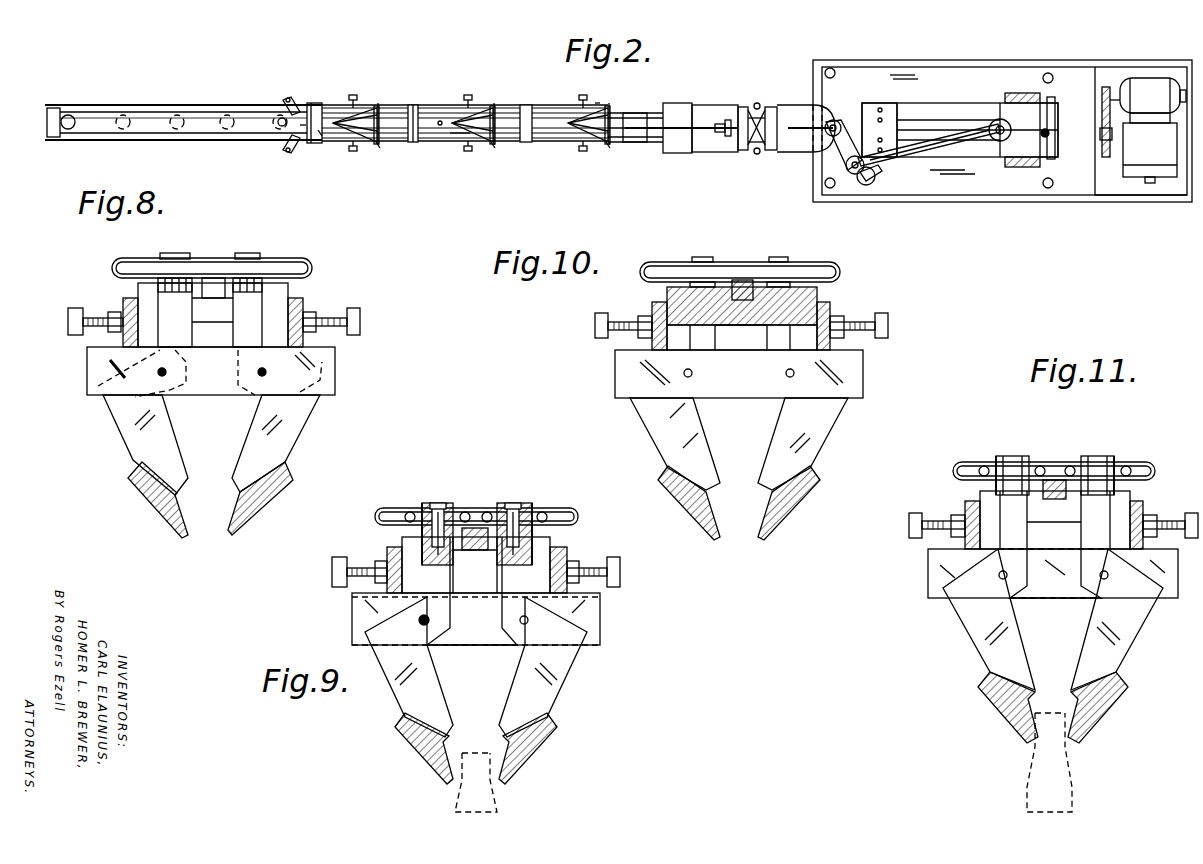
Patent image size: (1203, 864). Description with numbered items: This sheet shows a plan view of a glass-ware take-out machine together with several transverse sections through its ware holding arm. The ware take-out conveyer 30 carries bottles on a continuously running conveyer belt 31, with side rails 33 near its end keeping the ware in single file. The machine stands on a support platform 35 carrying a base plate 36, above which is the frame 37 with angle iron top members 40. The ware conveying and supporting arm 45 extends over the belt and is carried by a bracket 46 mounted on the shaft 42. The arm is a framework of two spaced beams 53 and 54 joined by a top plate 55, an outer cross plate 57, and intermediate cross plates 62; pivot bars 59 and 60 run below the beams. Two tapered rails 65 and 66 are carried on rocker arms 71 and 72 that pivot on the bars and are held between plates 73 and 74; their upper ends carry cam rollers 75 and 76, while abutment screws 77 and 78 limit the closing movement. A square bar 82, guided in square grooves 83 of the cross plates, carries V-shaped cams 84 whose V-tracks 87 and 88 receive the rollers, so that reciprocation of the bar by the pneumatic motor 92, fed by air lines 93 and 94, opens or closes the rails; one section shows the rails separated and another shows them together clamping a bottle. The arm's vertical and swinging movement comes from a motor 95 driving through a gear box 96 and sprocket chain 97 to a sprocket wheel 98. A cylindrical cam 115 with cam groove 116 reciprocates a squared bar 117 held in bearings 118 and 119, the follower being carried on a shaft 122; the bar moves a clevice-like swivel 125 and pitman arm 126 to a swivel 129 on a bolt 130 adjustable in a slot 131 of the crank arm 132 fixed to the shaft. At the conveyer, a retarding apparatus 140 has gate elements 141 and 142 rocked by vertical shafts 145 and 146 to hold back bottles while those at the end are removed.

In FIG. 2, the ware take-out conveyer 30 is at (114, 98).
In FIG. 2, the conveyer belt 31 is at (158, 118).
In FIG. 2, the side rails 33 is at (196, 120).
In FIG. 2, the support platform 35 is at (1113, 205).
In FIG. 2, the base plate 36 is at (992, 188).
In FIG. 2, the support or frame 37 is at (1072, 95).
In FIG. 2, the angle iron top members 40 is at (938, 103).
In FIG. 2, the shaft 42 is at (840, 119).
In FIG. 2, the ware conveying and supporting arm 45 is at (445, 150).
In FIG. 8, the ware conveying and supporting arm 45 is at (122, 458).
In FIG. 9, the ware conveying and supporting arm 45 is at (320, 602).
In FIG. 10, the ware conveying and supporting arm 45 is at (870, 302).
In FIG. 11, the ware conveying and supporting arm 45 is at (940, 628).
In FIG. 2, the bracket 46 is at (790, 110).
In FIG. 2, the beam 53 is at (635, 110).
In FIG. 8, the beam 53 is at (127, 298).
In FIG. 9, the beam 53 is at (388, 547).
In FIG. 10, the beam 53 is at (832, 302).
In FIG. 11, the beam 53 is at (970, 550).
In FIG. 2, the beam 54 is at (625, 145).
In FIG. 8, the beam 54 is at (300, 303).
In FIG. 9, the beam 54 is at (566, 547).
In FIG. 10, the beam 54 is at (655, 302).
In FIG. 11, the beam 54 is at (1144, 507).
In FIG. 2, the top plate 55 is at (675, 112).
In FIG. 2, the cross plate 57 is at (314, 104).
In FIG. 2, the pivot bar 59 is at (441, 118).
In FIG. 8, the pivot bar 59 is at (158, 378).
In FIG. 9, the pivot bar 59 is at (420, 620).
In FIG. 10, the pivot bar 59 is at (788, 377).
In FIG. 11, the pivot bar 59 is at (1000, 580).
In FIG. 2, the pivot bar 60 is at (545, 140).
In FIG. 8, the pivot bar 60 is at (268, 373).
In FIG. 9, the pivot bar 60 is at (530, 620).
In FIG. 10, the pivot bar 60 is at (692, 377).
In FIG. 11, the pivot bar 60 is at (1102, 580).
In FIG. 2, the cross plates 62 is at (415, 104).
In FIG. 8, the cross plates 62 is at (275, 295).
In FIG. 9, the cross plates 62 is at (402, 537).
In FIG. 10, the cross plates 62 is at (745, 322).
In FIG. 11, the cross plates 62 is at (1130, 492).
In FIG. 8, the rail 65 is at (160, 505).
In FIG. 9, the rail 65 is at (430, 770).
In FIG. 10, the rail 65 is at (788, 530).
In FIG. 11, the rail 65 is at (1005, 712).
In FIG. 8, the rail 66 is at (255, 505).
In FIG. 9, the rail 66 is at (520, 758).
In FIG. 10, the rail 66 is at (700, 530).
In FIG. 11, the rail 66 is at (1097, 710).
In FIG. 8, the rocker arm 71 is at (147, 437).
In FIG. 9, the rocker arm 71 is at (415, 696).
In FIG. 10, the rocker arm 71 is at (808, 435).
In FIG. 11, the rocker arm 71 is at (990, 648).
In FIG. 8, the rocker arm 72 is at (270, 440).
In FIG. 9, the rocker arm 72 is at (537, 692).
In FIG. 10, the rocker arm 72 is at (665, 430).
In FIG. 11, the rocker arm 72 is at (1118, 650).
In FIG. 9, the plate 73 is at (592, 625).
In FIG. 10, the plate 73 is at (850, 375).
In FIG. 11, the plate 73 is at (1167, 590).
In FIG. 8, the plate 74 is at (325, 365).
In FIG. 2, the cam roller 75 is at (360, 112).
In FIG. 8, the cam roller 75 is at (186, 257).
In FIG. 9, the cam roller 75 is at (428, 503).
In FIG. 10, the cam roller 75 is at (775, 257).
In FIG. 11, the cam roller 75 is at (1012, 456).
In FIG. 2, the cam roller 76 is at (585, 142).
In FIG. 8, the cam roller 76 is at (248, 256).
In FIG. 9, the cam roller 76 is at (503, 503).
In FIG. 10, the cam roller 76 is at (705, 257).
In FIG. 11, the cam roller 76 is at (1100, 456).
In FIG. 2, the abutment screw 77 is at (354, 94).
In FIG. 8, the abutment screw 77 is at (68, 323).
In FIG. 9, the abutment screw 77 is at (332, 571).
In FIG. 10, the abutment screw 77 is at (888, 330).
In FIG. 11, the abutment screw 77 is at (909, 524).
In FIG. 2, the abutment screw 78 is at (353, 152).
In FIG. 8, the abutment screw 78 is at (360, 323).
In FIG. 9, the abutment screw 78 is at (613, 568).
In FIG. 10, the abutment screw 78 is at (595, 326).
In FIG. 11, the abutment screw 78 is at (1173, 511).
In FIG. 2, the bar 82 is at (706, 125).
In FIG. 8, the bar 82 is at (214, 282).
In FIG. 9, the bar 82 is at (475, 575).
In FIG. 10, the bar 82 is at (742, 280).
In FIG. 11, the bar 82 is at (1056, 480).
In FIG. 8, the square grooves 83 is at (215, 310).
In FIG. 9, the square grooves 83 is at (488, 555).
In FIG. 10, the square grooves 83 is at (758, 322).
In FIG. 11, the square grooves 83 is at (1055, 500).
In FIG. 2, the V-shaped cams 84 is at (372, 108).
In FIG. 8, the V-shaped cams 84 is at (135, 260).
In FIG. 9, the V-shaped cams 84 is at (580, 518).
In FIG. 10, the V-shaped cams 84 is at (665, 262).
In FIG. 11, the V-shaped cams 84 is at (965, 464).
In FIG. 2, the V-track 87 is at (598, 104).
In FIG. 9, the V-track 87 is at (420, 503).
In FIG. 11, the V-track 87 is at (995, 456).
In FIG. 2, the V-track 88 is at (607, 148).
In FIG. 9, the V-track 88 is at (535, 503).
In FIG. 11, the V-track 88 is at (1118, 460).
In FIG. 2, the pneumatic motor 92 is at (768, 106).
In FIG. 2, the air line 93 is at (762, 150).
In FIG. 2, the air line 94 is at (750, 138).
In FIG. 2, the motor 95 is at (1148, 178).
In FIG. 2, the gear box 96 is at (1152, 78).
In FIG. 2, the sprocket chain 97 is at (1106, 86).
In FIG. 2, the sprocket wheel 98 is at (1150, 148).
In FIG. 2, the cylindrical cam 115 is at (1020, 92).
In FIG. 2, the cam groove 116 is at (1030, 168).
In FIG. 2, the squared bar 117 is at (1045, 160).
In FIG. 2, the bearing 118 is at (1085, 148).
In FIG. 2, the bearing 119 is at (885, 103).
In FIG. 2, the shaft 122 is at (1050, 96).
In FIG. 2, the clevice-like swivel 125 is at (993, 120).
In FIG. 2, the pitman arm 126 is at (930, 160).
In FIG. 2, the swivel 129 is at (876, 182).
In FIG. 2, the bolt 130 is at (853, 175).
In FIG. 2, the slot 131 is at (830, 150).
In FIG. 2, the crank arm 132 is at (866, 186).
In FIG. 2, the withholding or retarding apparatus 140 is at (282, 102).
In FIG. 2, the gate element 141 is at (300, 128).
In FIG. 2, the gate element 142 is at (320, 133).
In FIG. 2, the vertical rocking shaft 145 is at (292, 98).
In FIG. 2, the vertical rocking shaft 146 is at (288, 152).